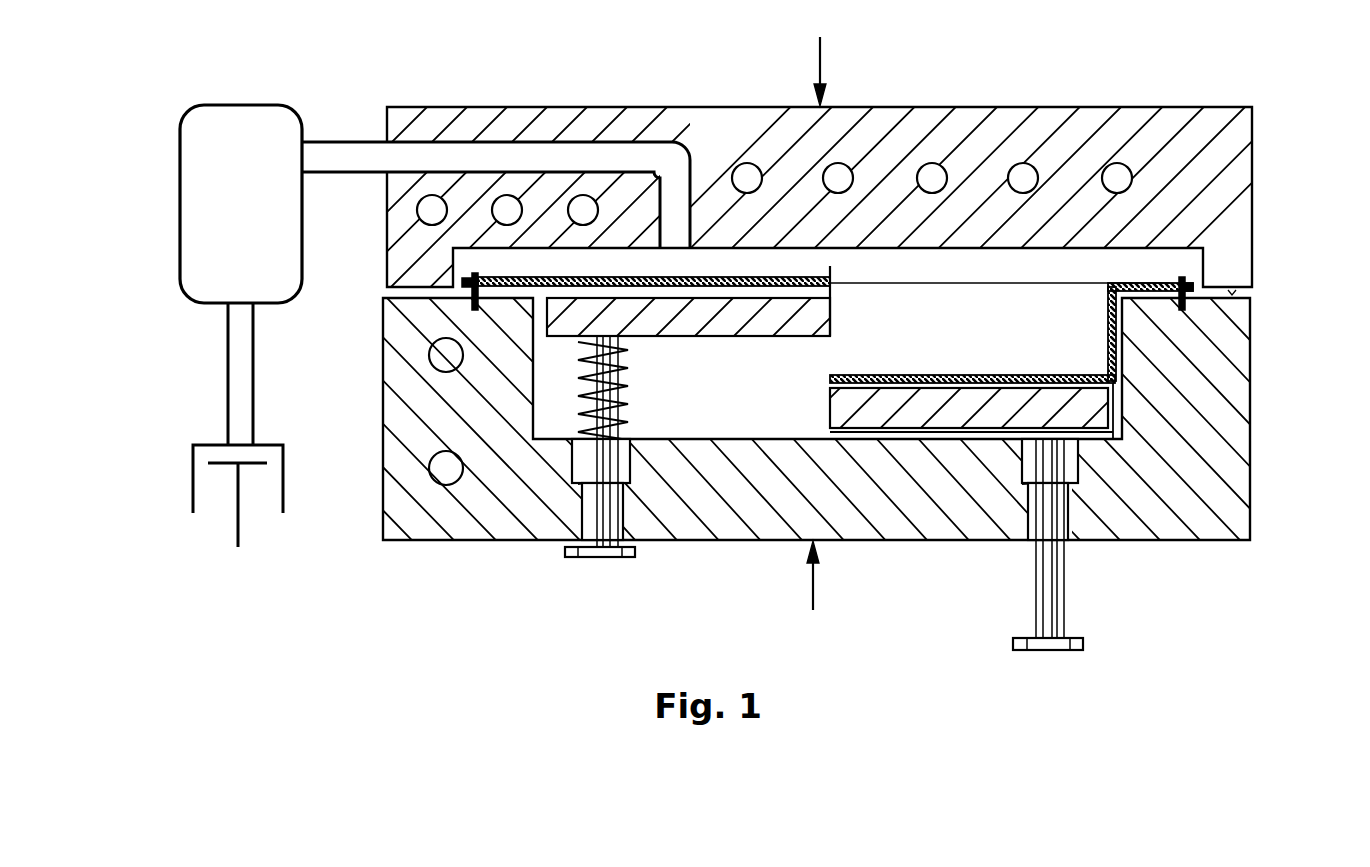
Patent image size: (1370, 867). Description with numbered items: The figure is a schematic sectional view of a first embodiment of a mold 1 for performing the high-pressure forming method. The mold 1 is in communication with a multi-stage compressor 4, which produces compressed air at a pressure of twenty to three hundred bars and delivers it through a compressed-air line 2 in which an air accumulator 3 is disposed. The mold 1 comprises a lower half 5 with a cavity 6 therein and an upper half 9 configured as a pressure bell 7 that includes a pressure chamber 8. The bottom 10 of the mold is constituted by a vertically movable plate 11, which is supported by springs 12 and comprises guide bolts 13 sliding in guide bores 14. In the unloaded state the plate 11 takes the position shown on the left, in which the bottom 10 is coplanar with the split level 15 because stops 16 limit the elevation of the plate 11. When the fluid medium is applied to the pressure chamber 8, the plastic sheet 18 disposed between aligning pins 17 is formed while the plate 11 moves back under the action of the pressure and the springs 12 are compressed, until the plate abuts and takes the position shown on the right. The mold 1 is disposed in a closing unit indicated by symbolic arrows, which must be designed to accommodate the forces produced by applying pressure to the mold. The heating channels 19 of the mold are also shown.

The mold 1 is at (1280, 126).
The compressed-air line 2 is at (235, 372).
The air accumulator 3 is at (193, 205).
The multi-stage compressor 4 is at (193, 487).
The lower half 5 is at (731, 419).
The cavity 6 is at (1093, 342).
The pressure bell 7 is at (820, 314).
The pressure chamber 8 is at (973, 262).
The upper half 9 is at (1162, 130).
The bottom 10 is at (762, 296).
The vertically movable plate 11 is at (920, 404).
The springs 12 is at (623, 393).
The guide bolts 13 is at (598, 550).
The guide bores 14 is at (580, 530).
The split level 15 is at (1232, 288).
The stops 16 is at (620, 555).
The aligning pins 17 is at (1124, 255).
The plastic sheet 18 is at (510, 276).
The heating channels 19 is at (745, 176).